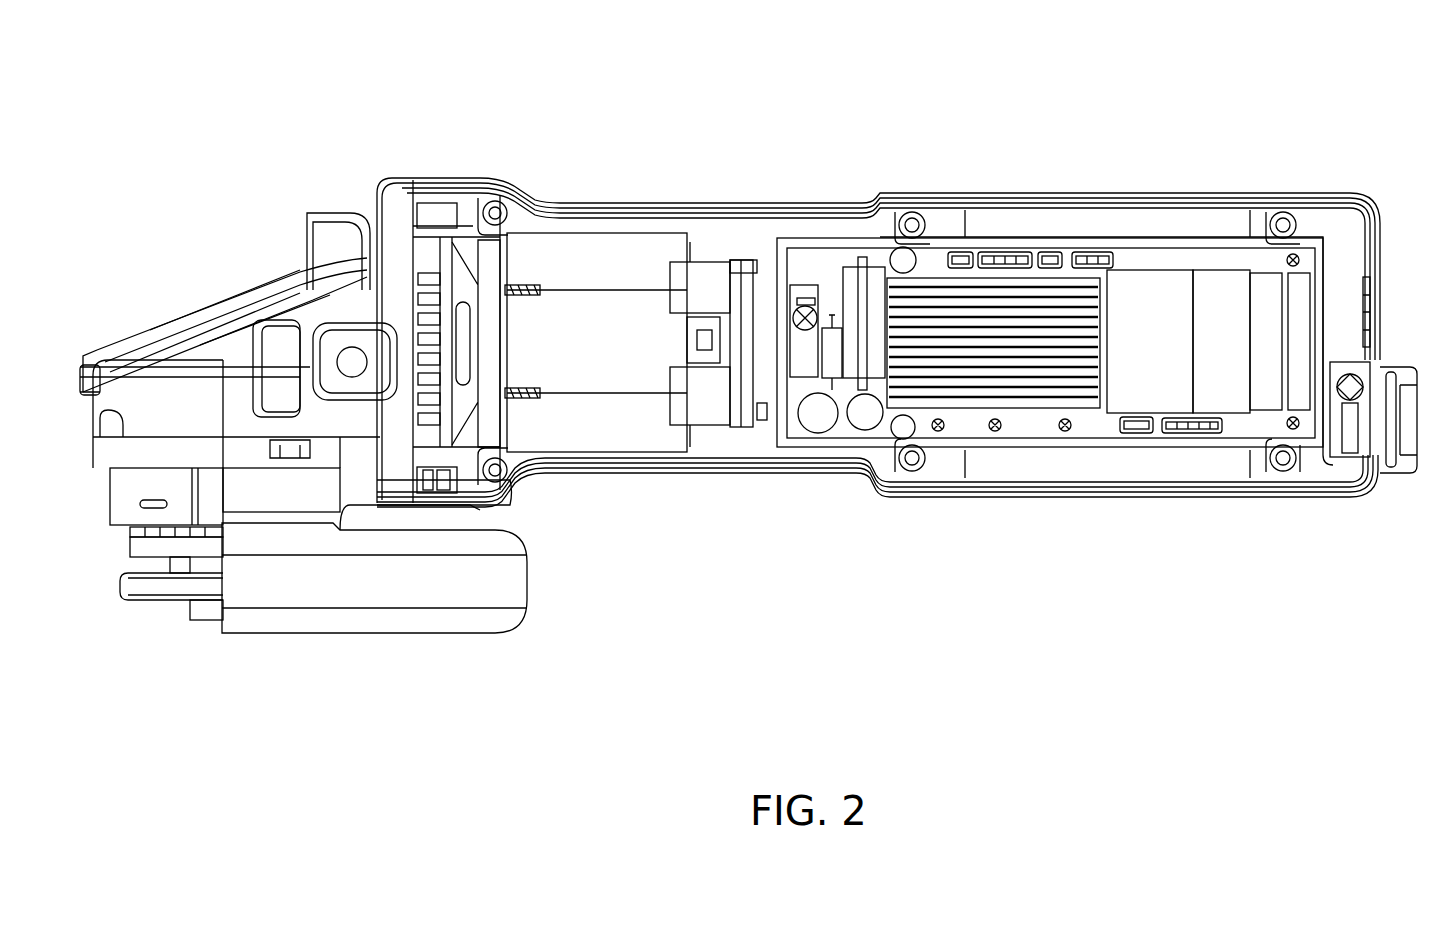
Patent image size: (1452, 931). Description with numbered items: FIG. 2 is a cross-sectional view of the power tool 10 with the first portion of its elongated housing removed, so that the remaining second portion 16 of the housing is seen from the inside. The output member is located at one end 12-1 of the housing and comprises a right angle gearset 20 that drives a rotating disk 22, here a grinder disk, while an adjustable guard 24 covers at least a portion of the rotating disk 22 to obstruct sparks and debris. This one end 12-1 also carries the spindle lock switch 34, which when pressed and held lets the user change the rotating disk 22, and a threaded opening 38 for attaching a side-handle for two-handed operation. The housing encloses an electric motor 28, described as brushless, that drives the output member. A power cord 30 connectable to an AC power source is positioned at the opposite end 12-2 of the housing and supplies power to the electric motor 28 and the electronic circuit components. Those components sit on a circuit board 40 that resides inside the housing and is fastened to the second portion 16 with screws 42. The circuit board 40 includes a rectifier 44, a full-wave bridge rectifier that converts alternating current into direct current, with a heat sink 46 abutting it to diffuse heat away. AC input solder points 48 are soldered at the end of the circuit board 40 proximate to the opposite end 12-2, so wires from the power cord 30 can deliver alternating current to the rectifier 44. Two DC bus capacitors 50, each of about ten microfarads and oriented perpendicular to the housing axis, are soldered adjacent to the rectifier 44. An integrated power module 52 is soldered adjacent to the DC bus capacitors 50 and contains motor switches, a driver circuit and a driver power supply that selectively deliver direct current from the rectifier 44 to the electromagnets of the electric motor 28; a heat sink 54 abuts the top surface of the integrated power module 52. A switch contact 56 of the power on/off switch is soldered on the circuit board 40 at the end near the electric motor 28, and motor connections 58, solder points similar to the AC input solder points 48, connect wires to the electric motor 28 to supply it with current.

The power tool 10 is at (1313, 102).
The one end of the housing 12-1 is at (181, 157).
The opposite end of the housing 12-2 is at (1390, 233).
The second portion 16 is at (1130, 194).
The right angle gearset 20 is at (215, 290).
The rotating disk 22 is at (155, 603).
The adjustable guard 24 is at (513, 580).
The electric motor 28 is at (612, 235).
The power cord 30 is at (1412, 456).
The spindle lock switch 34 is at (298, 220).
The threaded opening 38 is at (338, 358).
The circuit board 40 is at (830, 273).
The screws 42 is at (913, 213).
The rectifier 44 is at (1345, 460).
The heat sink 46 is at (1260, 310).
The AC input solder points 48 is at (1295, 256).
The DC bus capacitors 50 is at (1138, 386).
The integrated power module (IPM) 52 is at (1005, 278).
The heat sink 54 is at (930, 314).
The switch contact 56 is at (800, 287).
The motor connections 58 is at (939, 433).